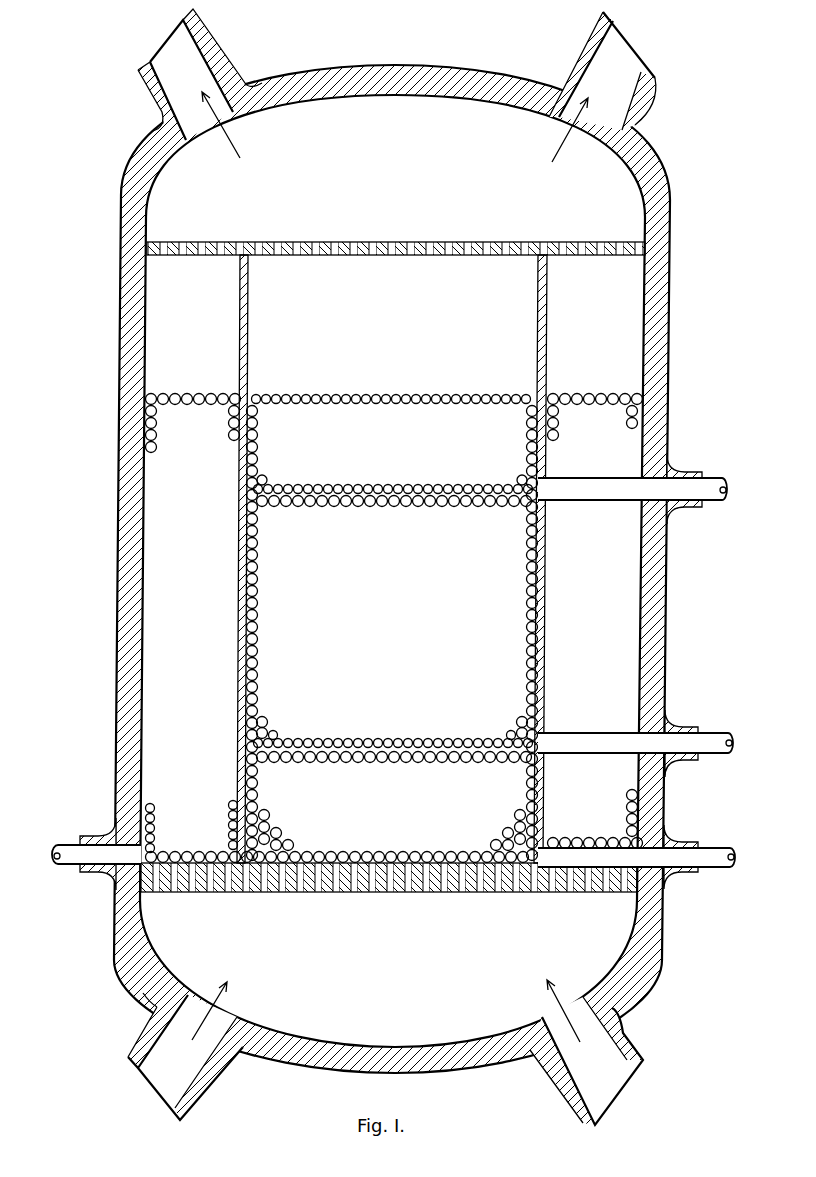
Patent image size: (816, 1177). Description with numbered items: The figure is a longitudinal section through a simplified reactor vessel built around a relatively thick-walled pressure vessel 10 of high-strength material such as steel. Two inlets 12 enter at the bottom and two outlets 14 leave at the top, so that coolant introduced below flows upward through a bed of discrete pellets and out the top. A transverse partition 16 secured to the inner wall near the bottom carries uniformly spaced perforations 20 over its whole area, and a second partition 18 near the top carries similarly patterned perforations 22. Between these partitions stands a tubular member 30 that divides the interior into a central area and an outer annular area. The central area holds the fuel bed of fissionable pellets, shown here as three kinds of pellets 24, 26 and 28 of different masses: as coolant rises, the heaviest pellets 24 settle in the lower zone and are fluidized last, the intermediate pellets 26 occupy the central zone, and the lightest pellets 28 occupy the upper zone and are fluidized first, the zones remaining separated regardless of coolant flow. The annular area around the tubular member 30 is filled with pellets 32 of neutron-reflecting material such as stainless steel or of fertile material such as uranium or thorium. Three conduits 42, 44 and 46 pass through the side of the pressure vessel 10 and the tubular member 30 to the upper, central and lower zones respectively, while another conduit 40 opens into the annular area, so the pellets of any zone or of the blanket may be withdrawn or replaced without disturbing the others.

The pressure vessel 10 is at (669, 320).
The inlets 12 is at (219, 1086).
The outlets 14 is at (226, 45).
The transverse partition 16 is at (419, 893).
The second partition 18 is at (389, 246).
The perforations 20 is at (380, 893).
The perforations 22 is at (455, 248).
The pellets 24 is at (386, 762).
The pellets 26 is at (378, 741).
The pellets 28 is at (402, 492).
The tubular member 30 is at (250, 366).
The pellets 32 is at (178, 397).
The conduit 40 is at (58, 845).
The conduit 42 is at (714, 485).
The conduit 44 is at (718, 740).
The conduit 46 is at (714, 850).